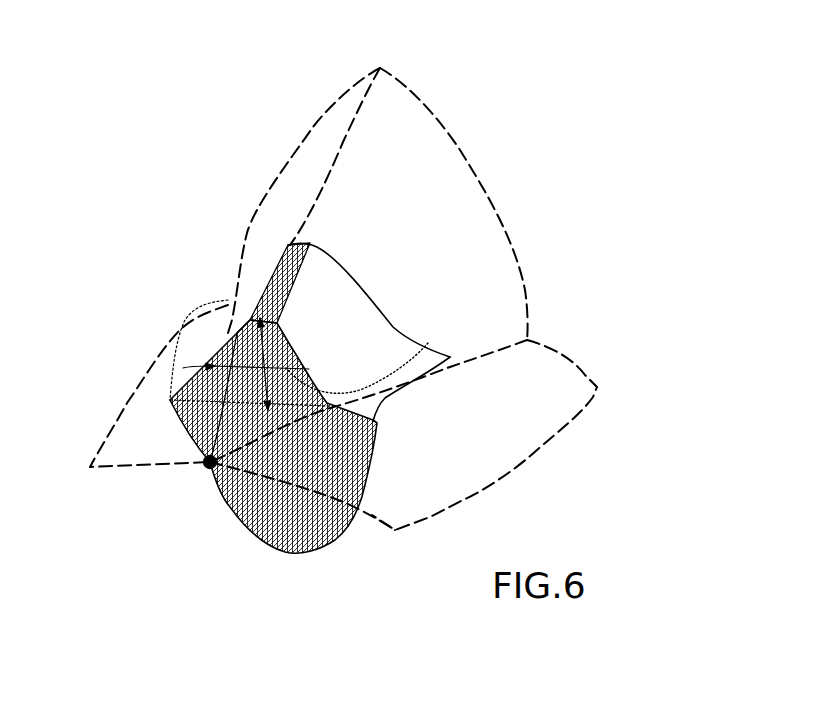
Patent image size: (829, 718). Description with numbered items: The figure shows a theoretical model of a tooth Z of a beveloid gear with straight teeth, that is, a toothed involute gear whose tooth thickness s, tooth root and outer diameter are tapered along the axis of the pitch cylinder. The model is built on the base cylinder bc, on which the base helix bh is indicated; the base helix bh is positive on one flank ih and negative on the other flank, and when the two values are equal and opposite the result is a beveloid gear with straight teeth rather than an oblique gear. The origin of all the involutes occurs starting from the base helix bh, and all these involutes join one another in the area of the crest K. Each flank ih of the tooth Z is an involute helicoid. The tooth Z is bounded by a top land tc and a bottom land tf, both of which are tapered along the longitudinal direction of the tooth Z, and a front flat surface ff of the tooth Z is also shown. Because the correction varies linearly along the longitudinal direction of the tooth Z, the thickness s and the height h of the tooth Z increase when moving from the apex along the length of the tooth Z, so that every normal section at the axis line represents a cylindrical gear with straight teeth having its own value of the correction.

The top land tc is at (285, 241).
The flank ih is at (323, 274).
The bottom land tf is at (399, 346).
The front flat surface ff is at (234, 331).
The height of the tooth h is at (277, 326).
The thickness of the tooth s is at (311, 370).
The tooth Z is at (362, 388).
The base cylinder bc is at (493, 404).
The base helix bh is at (460, 375).
The crest K is at (207, 464).